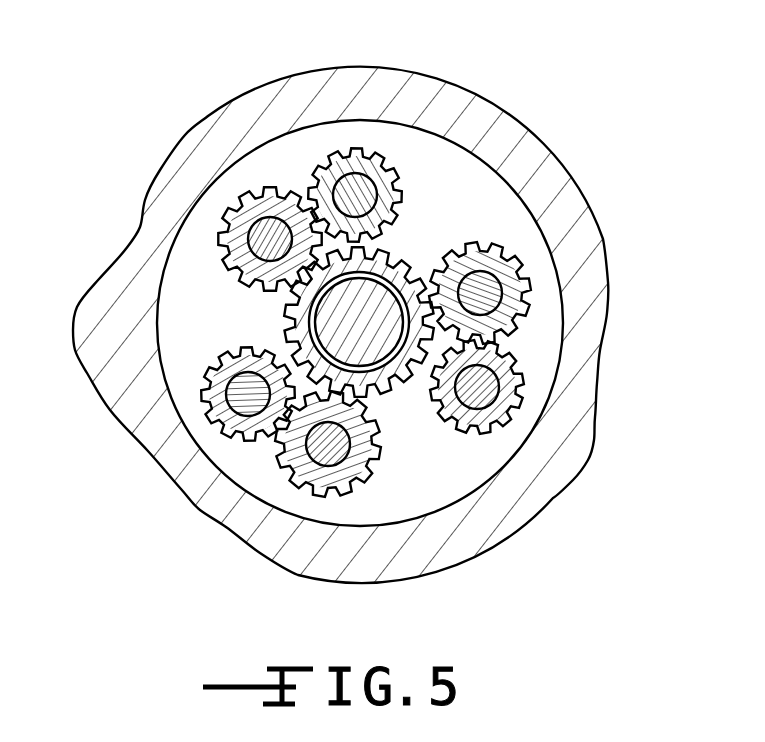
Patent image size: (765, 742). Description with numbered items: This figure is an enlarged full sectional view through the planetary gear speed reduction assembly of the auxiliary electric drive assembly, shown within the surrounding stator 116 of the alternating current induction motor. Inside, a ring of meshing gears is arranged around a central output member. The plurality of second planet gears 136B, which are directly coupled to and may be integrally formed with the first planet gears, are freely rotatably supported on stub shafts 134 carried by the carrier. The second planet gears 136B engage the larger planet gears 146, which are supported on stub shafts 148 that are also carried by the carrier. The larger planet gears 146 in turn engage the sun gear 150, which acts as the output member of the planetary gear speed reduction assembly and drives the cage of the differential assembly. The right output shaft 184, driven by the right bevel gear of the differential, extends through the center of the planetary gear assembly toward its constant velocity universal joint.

The stator 116 is at (485, 130).
The stub shafts 134 is at (353, 190).
The second planet gears 136B is at (229, 433).
The larger planet gears 146 is at (525, 268).
The stub shafts 148 is at (262, 232).
The sun gear 150 is at (400, 262).
The right output shaft 184 is at (347, 348).